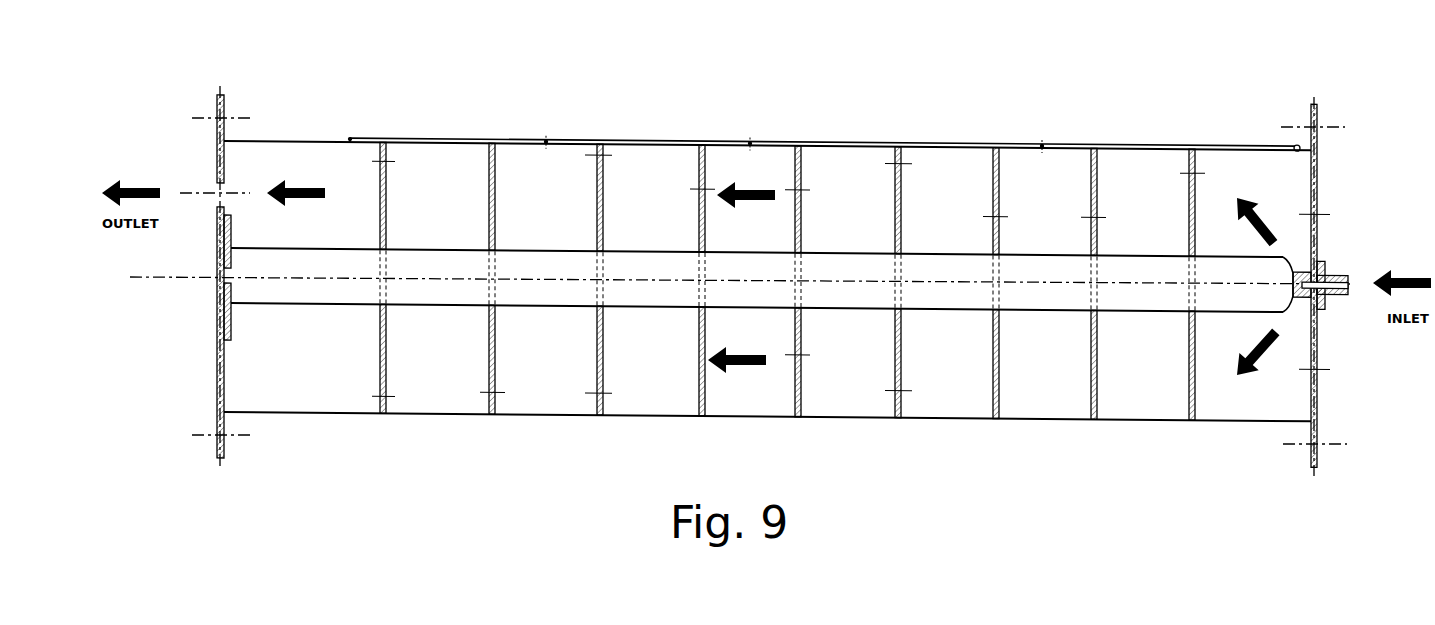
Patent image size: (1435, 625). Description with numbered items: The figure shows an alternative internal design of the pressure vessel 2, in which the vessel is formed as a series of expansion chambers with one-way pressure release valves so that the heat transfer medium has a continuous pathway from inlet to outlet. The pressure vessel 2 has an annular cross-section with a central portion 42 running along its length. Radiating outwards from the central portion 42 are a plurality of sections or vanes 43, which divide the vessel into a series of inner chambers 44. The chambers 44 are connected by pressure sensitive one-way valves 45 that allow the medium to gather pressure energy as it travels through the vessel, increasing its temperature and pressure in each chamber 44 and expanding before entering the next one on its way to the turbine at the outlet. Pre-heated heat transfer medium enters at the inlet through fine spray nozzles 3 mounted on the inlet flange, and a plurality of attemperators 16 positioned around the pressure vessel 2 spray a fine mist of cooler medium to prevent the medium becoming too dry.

The pressure vessel 2 is at (1068, 417).
The fine spray nozzles 3 is at (1303, 298).
The attemperators 16 is at (349, 137).
The central portion 42 is at (1042, 253).
The sections or vanes 43 is at (383, 413).
The inner chambers 44 is at (648, 176).
The pressure sensitive one-way valves 45 is at (600, 155).